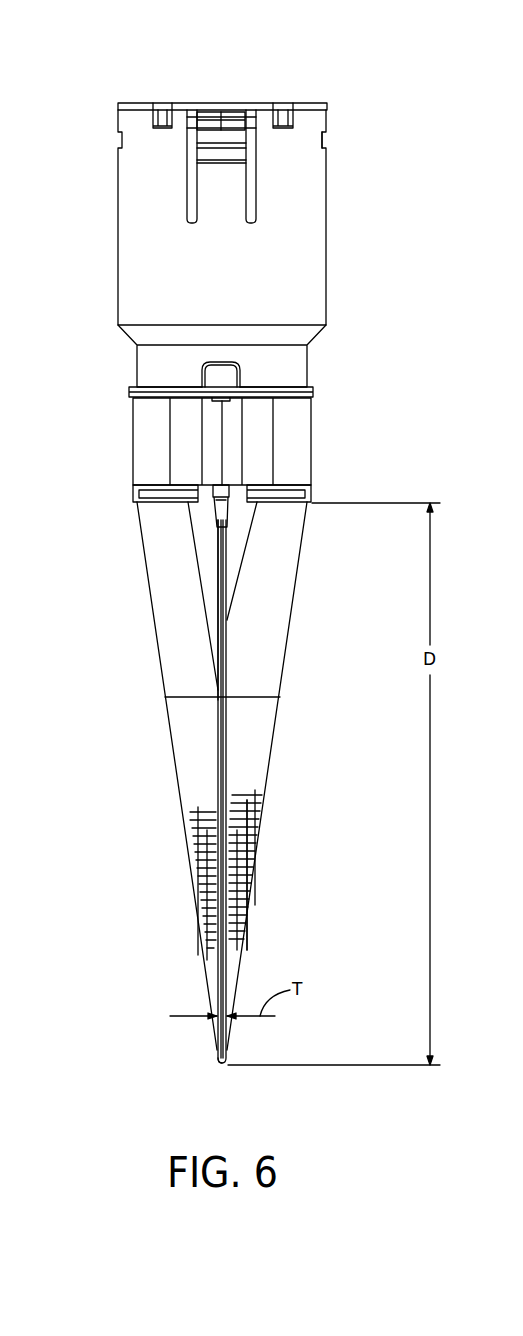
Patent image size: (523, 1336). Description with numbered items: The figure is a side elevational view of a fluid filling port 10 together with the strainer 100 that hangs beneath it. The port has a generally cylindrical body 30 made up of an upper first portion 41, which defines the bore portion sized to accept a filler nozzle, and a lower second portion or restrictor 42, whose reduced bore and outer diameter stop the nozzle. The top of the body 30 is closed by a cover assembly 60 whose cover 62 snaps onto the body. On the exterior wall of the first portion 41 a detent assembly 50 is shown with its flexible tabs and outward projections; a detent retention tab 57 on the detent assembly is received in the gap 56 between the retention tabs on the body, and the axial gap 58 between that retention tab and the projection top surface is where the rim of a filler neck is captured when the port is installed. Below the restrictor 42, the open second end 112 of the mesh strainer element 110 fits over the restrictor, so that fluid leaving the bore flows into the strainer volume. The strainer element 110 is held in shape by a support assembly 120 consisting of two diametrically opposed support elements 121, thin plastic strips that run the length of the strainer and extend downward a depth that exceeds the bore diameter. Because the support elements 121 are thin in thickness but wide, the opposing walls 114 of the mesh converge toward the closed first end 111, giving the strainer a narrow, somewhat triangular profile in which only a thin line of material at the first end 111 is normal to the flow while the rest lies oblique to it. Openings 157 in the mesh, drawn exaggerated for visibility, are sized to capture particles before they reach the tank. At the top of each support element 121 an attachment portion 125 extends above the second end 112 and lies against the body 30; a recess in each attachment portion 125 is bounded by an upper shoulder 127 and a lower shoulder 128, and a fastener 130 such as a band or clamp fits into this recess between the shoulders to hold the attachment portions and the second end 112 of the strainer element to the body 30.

The fluid filling port 10 is at (56, 122).
The cover 62 is at (118, 104).
The cover assembly 60 is at (145, 97).
The gap 58 is at (220, 114).
The detent retention tab 57 is at (230, 116).
The gap 56 is at (245, 114).
The detent assembly 50 is at (228, 186).
The first portion 41 is at (280, 255).
The body 30 is at (150, 240).
The restrictor 42 is at (290, 370).
The fastener 130 is at (143, 425).
The shoulder 127 is at (222, 400).
The shoulder 128 is at (222, 462).
The second end 112 is at (137, 492).
The attachment portion 125 is at (230, 512).
The strainer 100 is at (145, 600).
The support element 121 is at (230, 690).
The strainer element 110 is at (168, 735).
The support assembly 120 is at (226, 786).
The walls 114 is at (185, 805).
The openings 157 is at (250, 865).
The first end 111 is at (217, 1057).